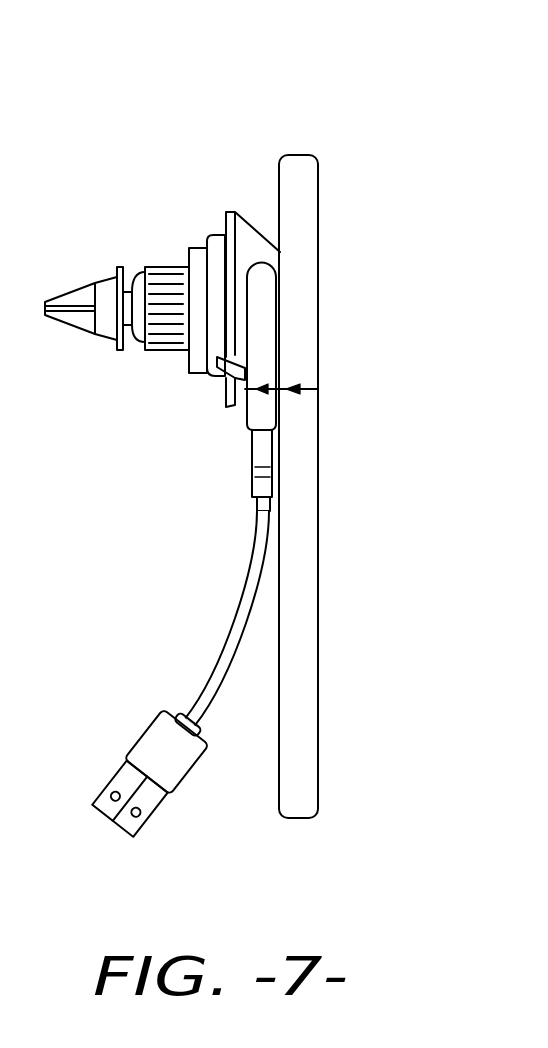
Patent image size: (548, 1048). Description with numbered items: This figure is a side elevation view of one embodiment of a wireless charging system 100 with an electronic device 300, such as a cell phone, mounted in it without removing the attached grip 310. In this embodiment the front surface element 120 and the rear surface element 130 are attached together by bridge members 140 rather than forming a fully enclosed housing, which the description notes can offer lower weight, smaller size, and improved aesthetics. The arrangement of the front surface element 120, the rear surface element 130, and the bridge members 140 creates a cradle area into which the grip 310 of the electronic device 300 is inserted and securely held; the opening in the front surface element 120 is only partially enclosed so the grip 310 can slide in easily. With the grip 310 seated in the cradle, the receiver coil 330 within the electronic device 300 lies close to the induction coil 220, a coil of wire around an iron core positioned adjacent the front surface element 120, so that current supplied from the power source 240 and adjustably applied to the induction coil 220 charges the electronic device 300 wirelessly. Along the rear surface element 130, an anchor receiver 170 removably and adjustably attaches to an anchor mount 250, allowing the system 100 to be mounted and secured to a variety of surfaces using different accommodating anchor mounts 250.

The wireless charging system 100 is at (325, 90).
The front surface element 120 is at (267, 410).
The rear surface element 130 is at (215, 246).
The bridge members 140 is at (214, 392).
The anchor receiver 170 is at (158, 266).
The induction coil 220 is at (236, 385).
The power source 240 is at (262, 458).
The anchor mount 250 is at (108, 336).
The electronic device 300 is at (320, 240).
The grip 310 is at (256, 226).
The receiver coil 330 is at (297, 390).